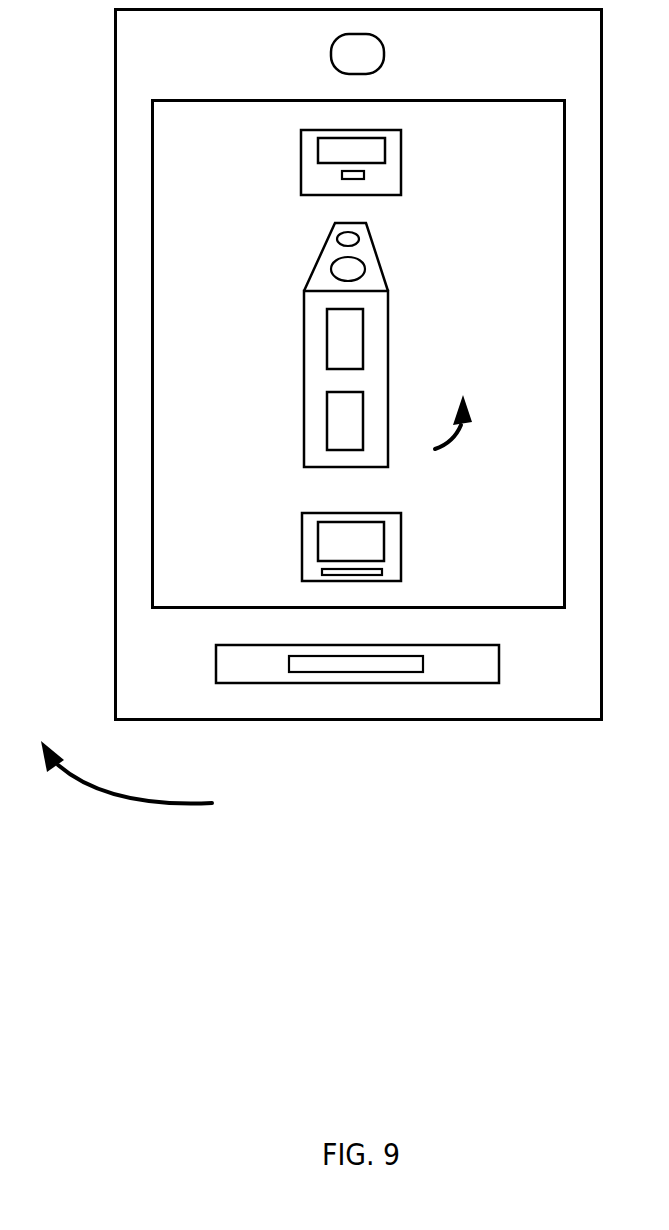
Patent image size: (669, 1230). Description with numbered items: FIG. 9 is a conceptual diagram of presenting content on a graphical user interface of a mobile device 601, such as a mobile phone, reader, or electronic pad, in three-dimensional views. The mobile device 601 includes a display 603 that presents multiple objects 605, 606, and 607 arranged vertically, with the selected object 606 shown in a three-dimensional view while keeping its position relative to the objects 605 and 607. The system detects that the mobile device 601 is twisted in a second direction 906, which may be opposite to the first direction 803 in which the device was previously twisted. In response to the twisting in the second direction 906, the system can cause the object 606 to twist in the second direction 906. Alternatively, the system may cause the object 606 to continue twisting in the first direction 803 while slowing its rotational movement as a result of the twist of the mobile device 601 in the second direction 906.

The mobile device 601 is at (112, 361).
The display 603 is at (170, 216).
The object 605 is at (300, 152).
The object 606 is at (304, 337).
The object 607 is at (302, 544).
The first direction 803 is at (462, 430).
The second direction 906 is at (112, 796).